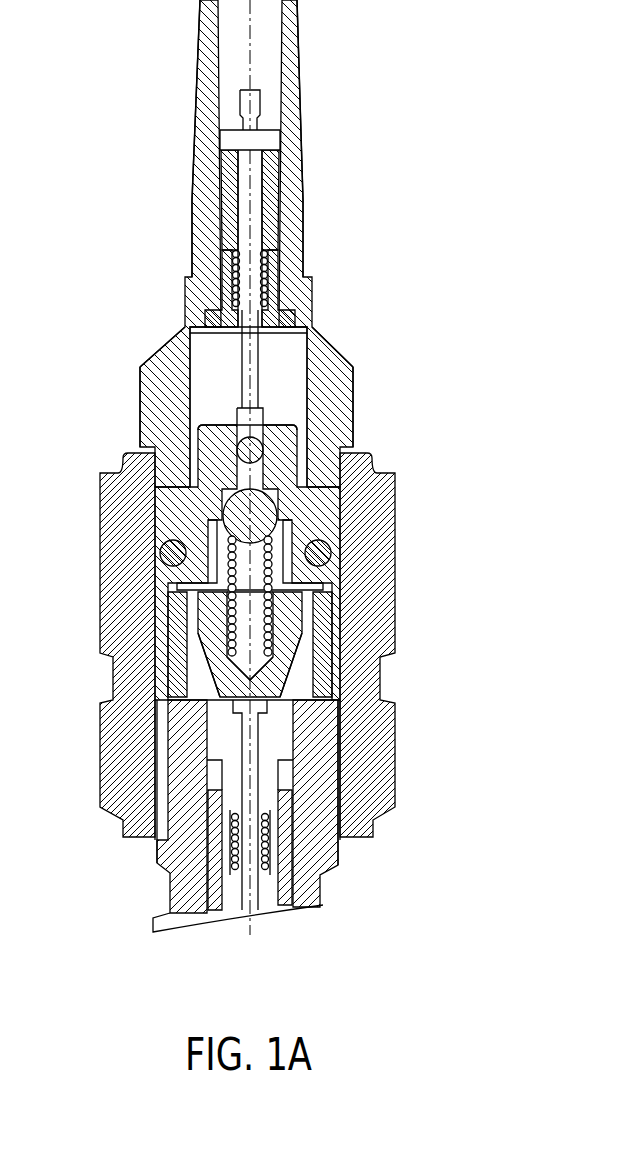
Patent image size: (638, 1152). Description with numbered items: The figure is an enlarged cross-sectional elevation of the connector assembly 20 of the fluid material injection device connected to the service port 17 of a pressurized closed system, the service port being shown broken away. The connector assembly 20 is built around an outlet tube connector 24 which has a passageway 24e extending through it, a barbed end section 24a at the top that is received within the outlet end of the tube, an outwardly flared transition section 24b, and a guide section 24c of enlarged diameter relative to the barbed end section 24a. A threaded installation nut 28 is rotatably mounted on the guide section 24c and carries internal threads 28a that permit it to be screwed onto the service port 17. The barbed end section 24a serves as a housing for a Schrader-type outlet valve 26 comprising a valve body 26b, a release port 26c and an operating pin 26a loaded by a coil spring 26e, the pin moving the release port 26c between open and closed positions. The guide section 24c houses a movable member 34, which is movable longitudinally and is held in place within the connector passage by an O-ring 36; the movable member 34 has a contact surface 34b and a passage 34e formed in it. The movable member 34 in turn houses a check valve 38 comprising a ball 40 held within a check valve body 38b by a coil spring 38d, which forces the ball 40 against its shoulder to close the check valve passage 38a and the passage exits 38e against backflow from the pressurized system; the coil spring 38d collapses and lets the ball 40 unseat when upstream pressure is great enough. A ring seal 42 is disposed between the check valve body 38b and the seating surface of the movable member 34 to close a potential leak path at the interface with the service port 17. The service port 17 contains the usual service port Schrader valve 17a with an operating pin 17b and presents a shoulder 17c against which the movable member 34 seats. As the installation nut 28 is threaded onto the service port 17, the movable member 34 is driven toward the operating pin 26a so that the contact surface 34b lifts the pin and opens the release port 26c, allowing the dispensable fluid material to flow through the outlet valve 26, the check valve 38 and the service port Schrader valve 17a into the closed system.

The service port 17 is at (157, 888).
The service port Schrader valve 17a is at (262, 880).
The operating pin 17b is at (265, 740).
The shoulder 17c is at (195, 703).
The connector assembly 20 is at (88, 583).
The outlet tube connector 24 is at (343, 340).
The barbed end section 24a is at (302, 137).
The outwardly flared transition section 24b is at (165, 342).
The guide section 24c is at (353, 418).
The passageway 24e is at (292, 403).
The outlet valve 26 is at (290, 216).
The operating pin 26a is at (262, 382).
The valve body 26b is at (283, 196).
The release port 26c is at (228, 143).
The coil spring 26e is at (267, 262).
The installation nut 28 is at (408, 580).
The threads 28a is at (157, 808).
The movable member 34 is at (208, 492).
The contact surface 34b is at (205, 418).
The passage 34e is at (237, 455).
The O-ring 36 is at (168, 555).
The check valve 38 is at (188, 633).
The check valve passage 38a is at (225, 537).
The check valve body 38b is at (300, 615).
The coil spring 38d is at (245, 600).
The passage exits 38e is at (235, 672).
The ball 40 is at (262, 513).
The ring seal 42 is at (308, 647).